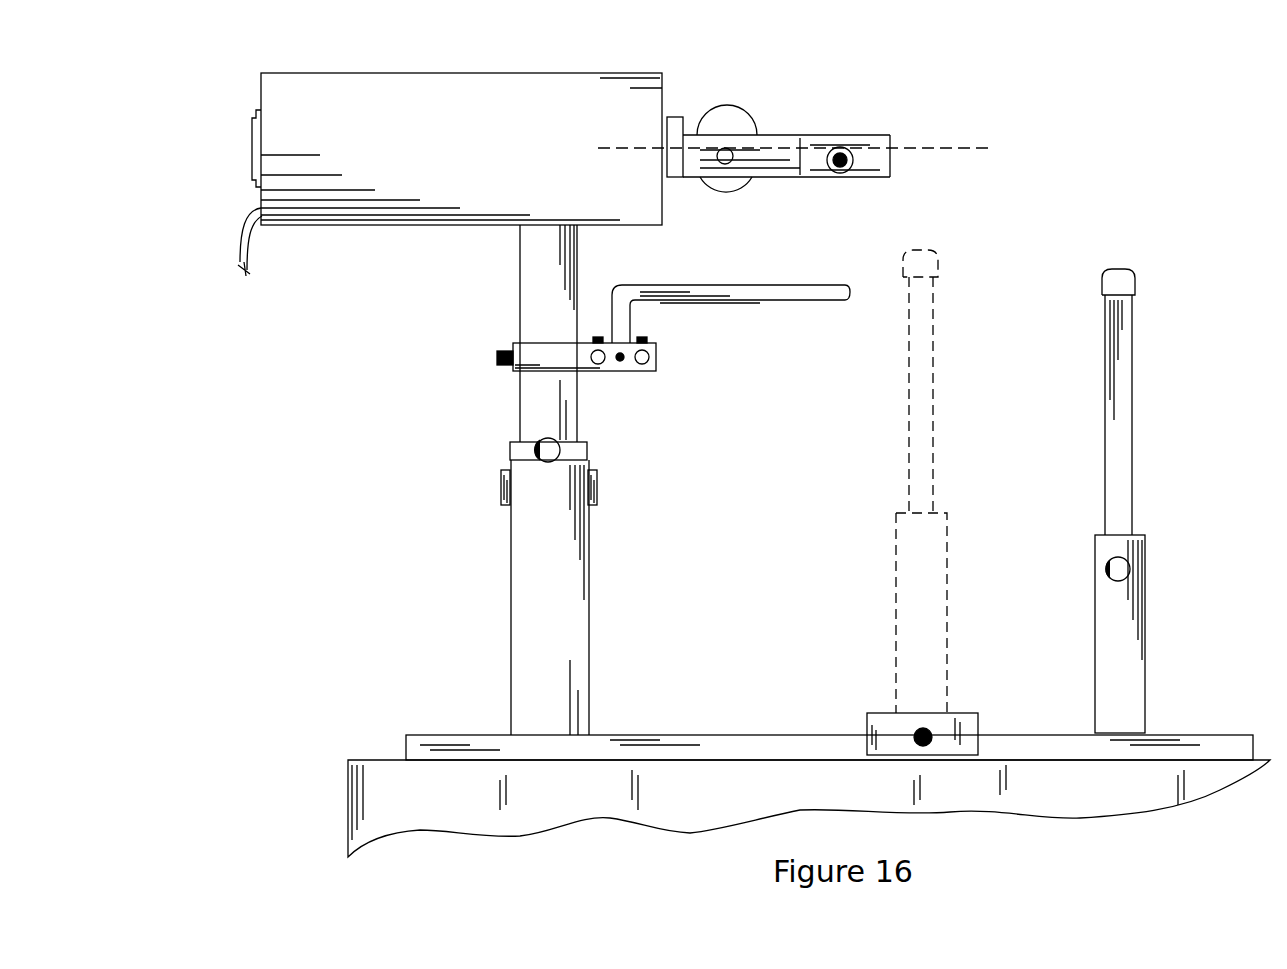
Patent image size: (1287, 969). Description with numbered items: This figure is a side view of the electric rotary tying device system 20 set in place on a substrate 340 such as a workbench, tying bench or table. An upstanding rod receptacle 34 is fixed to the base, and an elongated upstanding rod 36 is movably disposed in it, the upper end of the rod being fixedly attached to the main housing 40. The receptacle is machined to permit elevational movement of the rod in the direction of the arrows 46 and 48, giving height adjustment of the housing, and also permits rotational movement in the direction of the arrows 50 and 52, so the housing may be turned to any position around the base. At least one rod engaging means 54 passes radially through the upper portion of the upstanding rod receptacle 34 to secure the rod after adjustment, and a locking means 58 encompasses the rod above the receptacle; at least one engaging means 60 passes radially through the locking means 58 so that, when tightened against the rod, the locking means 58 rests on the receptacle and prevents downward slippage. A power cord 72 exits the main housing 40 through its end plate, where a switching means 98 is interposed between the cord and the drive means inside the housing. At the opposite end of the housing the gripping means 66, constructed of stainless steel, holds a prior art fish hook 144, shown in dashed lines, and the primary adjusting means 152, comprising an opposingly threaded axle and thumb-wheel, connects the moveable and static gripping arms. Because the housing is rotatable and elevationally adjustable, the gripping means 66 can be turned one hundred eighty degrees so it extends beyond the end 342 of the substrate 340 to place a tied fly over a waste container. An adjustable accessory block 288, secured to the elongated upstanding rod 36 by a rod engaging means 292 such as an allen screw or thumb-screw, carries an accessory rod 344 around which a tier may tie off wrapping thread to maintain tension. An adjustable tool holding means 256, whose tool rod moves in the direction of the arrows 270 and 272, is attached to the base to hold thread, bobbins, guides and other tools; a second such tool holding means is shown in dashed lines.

The electric rotary tying device system 20 is at (1122, 113).
The upstanding rod receptacle 34 is at (585, 565).
The elongated upstanding rod 36 is at (520, 262).
The main housing 40 is at (487, 85).
The arrow 46 is at (716, 450).
The arrow 48 is at (739, 417).
The arrow 50 is at (492, 420).
The arrow 52 is at (605, 418).
The rod engaging means 54 is at (501, 488).
The locking means 58 is at (510, 457).
The engaging means 60 is at (546, 456).
The gripping means 66 is at (772, 133).
The power cord 72 is at (250, 245).
The switching means 98 is at (252, 132).
The fish hook 144 is at (942, 148).
The primary adjusting means 152 is at (729, 122).
The adjustable tool holding means 256 is at (1144, 533).
The arrow 270 is at (921, 481).
The arrow 272 is at (1056, 491).
The adjustable accessory block 288 is at (531, 335).
The rod engaging means 292 is at (497, 358).
The substrate 340 is at (690, 824).
The end 342 is at (348, 808).
The accessory rod 344 is at (722, 300).